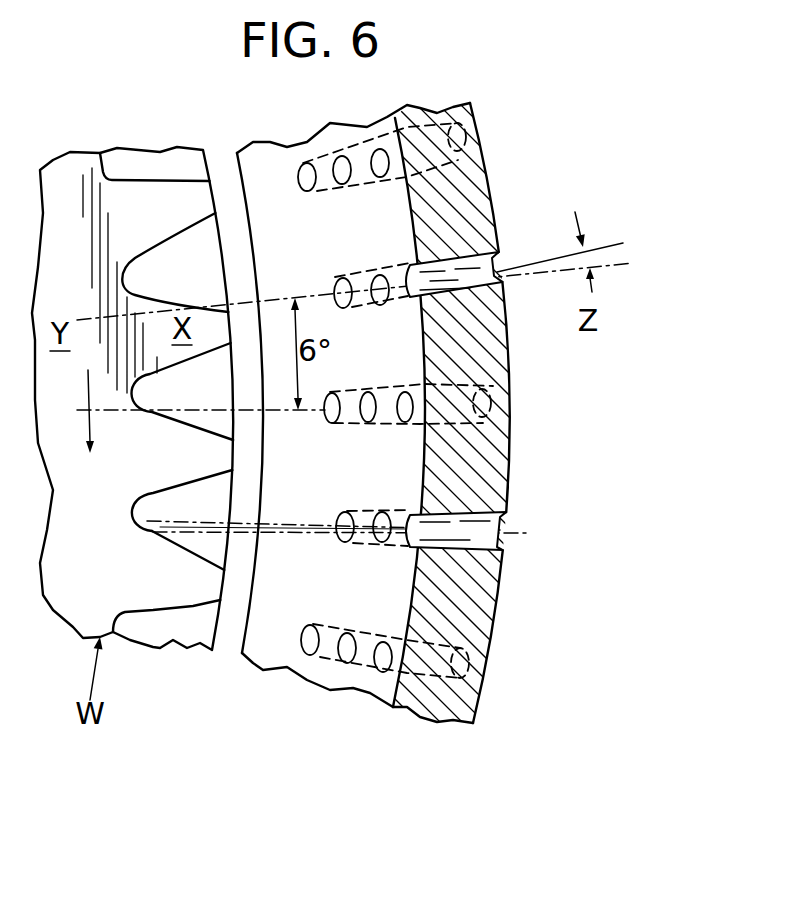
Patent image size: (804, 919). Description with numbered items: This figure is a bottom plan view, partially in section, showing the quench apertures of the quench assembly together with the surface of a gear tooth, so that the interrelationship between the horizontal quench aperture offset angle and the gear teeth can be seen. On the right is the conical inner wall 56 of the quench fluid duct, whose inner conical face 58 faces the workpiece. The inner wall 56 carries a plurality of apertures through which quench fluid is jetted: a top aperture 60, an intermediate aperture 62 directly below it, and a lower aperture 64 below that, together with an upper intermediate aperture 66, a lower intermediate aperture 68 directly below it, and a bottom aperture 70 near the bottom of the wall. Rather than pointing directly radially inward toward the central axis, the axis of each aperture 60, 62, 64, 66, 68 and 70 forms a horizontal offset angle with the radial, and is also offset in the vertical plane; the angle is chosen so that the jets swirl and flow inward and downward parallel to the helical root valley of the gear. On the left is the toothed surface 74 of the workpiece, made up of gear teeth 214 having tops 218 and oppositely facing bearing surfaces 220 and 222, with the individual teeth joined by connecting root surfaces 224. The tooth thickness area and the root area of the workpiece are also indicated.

The gear teeth 214 is at (148, 195).
The toothed surface 74 is at (181, 168).
The inner conical face 58 is at (278, 162).
The conical inner wall 56 is at (470, 180).
The bottom aperture 70 is at (492, 241).
The upper intermediate aperture 66 is at (340, 280).
The lower intermediate aperture 68 is at (380, 275).
The top aperture 60 is at (331, 420).
The intermediate aperture 62 is at (368, 423).
The lower aperture 64 is at (406, 424).
The connecting root surfaces 224 is at (136, 503).
The bearing surface 220 is at (167, 535).
The tops 218 is at (222, 590).
The bearing surface 222 is at (160, 611).